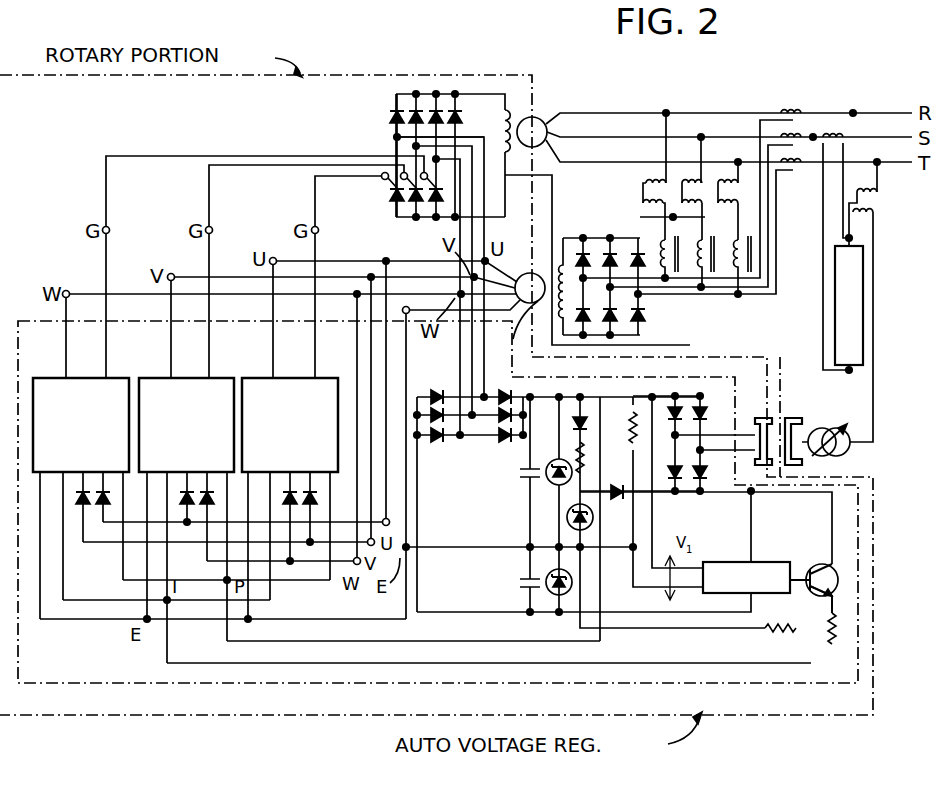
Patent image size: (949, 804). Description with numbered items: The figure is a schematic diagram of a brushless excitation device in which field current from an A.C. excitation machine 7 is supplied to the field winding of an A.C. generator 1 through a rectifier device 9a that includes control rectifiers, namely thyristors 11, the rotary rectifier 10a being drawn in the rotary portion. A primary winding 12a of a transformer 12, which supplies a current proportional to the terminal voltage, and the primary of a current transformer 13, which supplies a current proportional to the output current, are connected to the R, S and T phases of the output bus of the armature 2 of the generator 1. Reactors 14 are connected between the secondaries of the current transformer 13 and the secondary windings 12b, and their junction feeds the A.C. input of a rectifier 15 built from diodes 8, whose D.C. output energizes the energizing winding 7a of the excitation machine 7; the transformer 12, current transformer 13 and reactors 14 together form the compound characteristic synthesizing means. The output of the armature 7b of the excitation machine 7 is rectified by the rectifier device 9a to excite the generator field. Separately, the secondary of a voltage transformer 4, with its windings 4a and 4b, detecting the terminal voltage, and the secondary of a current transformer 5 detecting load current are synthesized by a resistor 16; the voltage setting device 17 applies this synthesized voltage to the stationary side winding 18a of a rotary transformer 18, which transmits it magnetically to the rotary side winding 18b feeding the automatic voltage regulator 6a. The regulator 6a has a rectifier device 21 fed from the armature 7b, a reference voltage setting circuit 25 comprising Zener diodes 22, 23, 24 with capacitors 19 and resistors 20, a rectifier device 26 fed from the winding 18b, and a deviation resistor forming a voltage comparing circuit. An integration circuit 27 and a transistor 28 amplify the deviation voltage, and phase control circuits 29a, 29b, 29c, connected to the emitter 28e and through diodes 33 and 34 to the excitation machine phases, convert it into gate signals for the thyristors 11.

The A.C. generator 1 is at (520, 106).
The armature 2 is at (543, 118).
The voltage transformer 4 is at (884, 228).
The primary winding of voltage transformer 4a is at (880, 194).
The secondary winding of voltage transformer 4b is at (864, 220).
The current transformer 5 is at (832, 130).
The automatic voltage regulator 6a is at (687, 371).
The A.C. excitation machine 7 is at (517, 274).
The energizing winding 7a is at (569, 269).
The armature of A.C. excitation machine 7b is at (512, 331).
The diode 8 is at (392, 116).
The rectifier device 9a is at (394, 142).
The rotary rectifier 10a is at (400, 76).
The thyristor 11 is at (390, 195).
The transformer 12 is at (663, 176).
The primary winding 12a is at (652, 180).
The secondary winding 12b is at (644, 205).
The current transformer 13 is at (795, 108).
The reactor 14 is at (720, 246).
The rectifier 15 is at (597, 236).
The resistor 16 is at (863, 318).
The voltage setting device 17 is at (848, 452).
The rotary transformer 18 is at (762, 393).
The stationary side winding 18a is at (802, 432).
The rotary side winding 18b is at (782, 422).
The capacitor 19 is at (526, 478).
The resistor 20 is at (588, 455).
The rectifier device 21 is at (480, 440).
The Zener diode 22 is at (546, 470).
The Zener diode 23 is at (557, 597).
The Zener diode 24 is at (594, 517).
The reference voltage setting circuit 25 is at (548, 532).
The rectifier device 26 is at (688, 504).
The integration circuit 27 is at (772, 562).
The transistor 28 is at (836, 570).
The emitter 28e is at (838, 580).
The phase control circuit 29a is at (258, 376).
The phase control circuit 29b is at (156, 376).
The phase control circuit 29c is at (53, 376).
The diode 33 is at (214, 490).
The diode 34 is at (178, 490).